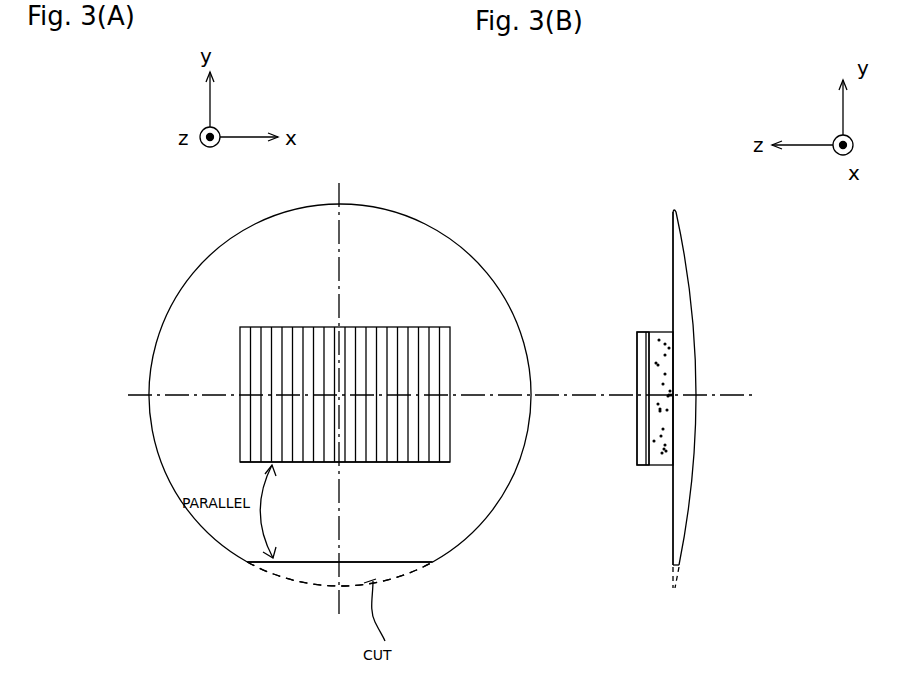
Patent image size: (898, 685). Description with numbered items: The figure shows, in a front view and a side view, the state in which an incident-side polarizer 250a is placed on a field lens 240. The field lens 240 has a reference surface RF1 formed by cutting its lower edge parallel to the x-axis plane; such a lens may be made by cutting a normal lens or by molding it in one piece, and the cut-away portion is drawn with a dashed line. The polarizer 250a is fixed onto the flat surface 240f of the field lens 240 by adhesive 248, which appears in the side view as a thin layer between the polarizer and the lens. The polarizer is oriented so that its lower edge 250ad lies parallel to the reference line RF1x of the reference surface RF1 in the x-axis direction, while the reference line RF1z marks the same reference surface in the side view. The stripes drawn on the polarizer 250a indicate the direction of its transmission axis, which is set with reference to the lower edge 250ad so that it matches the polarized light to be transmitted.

In FIG. 3A, the field lens 240 is at (170, 312).
In FIG. 3B, the field lens 240 is at (683, 522).
In FIG. 3B, the flat surface 240f is at (673, 232).
In FIG. 3A, the incident-side polarizer 250a is at (393, 340).
In FIG. 3B, the incident-side polarizer 250a is at (643, 332).
In FIG. 3A, the lower edge 250ad is at (378, 463).
In FIG. 3B, the adhesive 248 is at (660, 468).
In FIG. 3A, the reference line RF1x is at (408, 562).
In FIG. 3A, the reference surface RF1 is at (400, 572).
In FIG. 3B, the reference line in z-axis direction RF1z is at (680, 571).